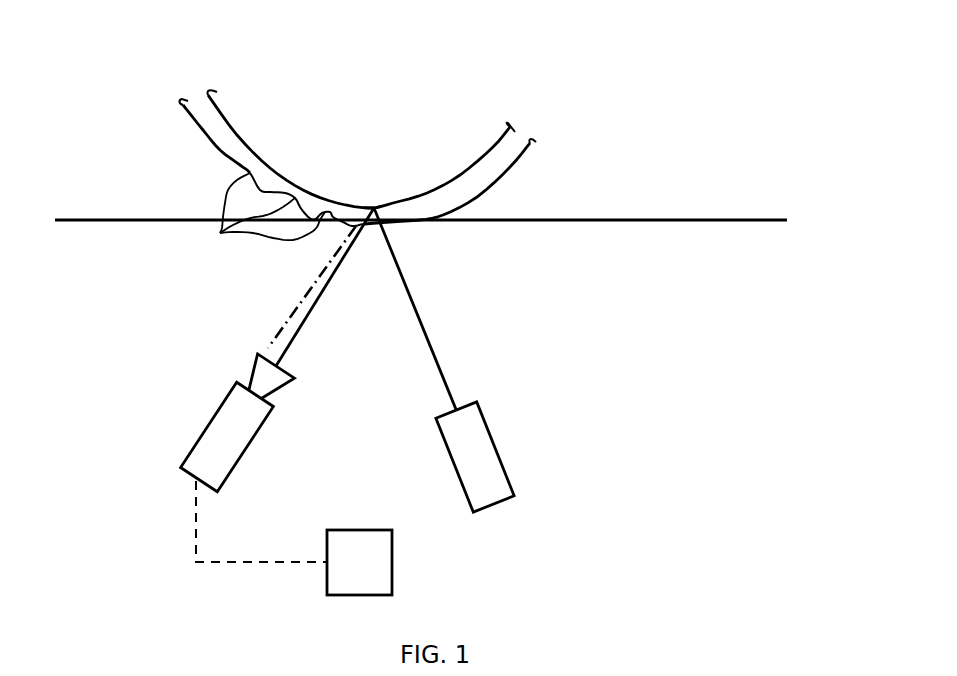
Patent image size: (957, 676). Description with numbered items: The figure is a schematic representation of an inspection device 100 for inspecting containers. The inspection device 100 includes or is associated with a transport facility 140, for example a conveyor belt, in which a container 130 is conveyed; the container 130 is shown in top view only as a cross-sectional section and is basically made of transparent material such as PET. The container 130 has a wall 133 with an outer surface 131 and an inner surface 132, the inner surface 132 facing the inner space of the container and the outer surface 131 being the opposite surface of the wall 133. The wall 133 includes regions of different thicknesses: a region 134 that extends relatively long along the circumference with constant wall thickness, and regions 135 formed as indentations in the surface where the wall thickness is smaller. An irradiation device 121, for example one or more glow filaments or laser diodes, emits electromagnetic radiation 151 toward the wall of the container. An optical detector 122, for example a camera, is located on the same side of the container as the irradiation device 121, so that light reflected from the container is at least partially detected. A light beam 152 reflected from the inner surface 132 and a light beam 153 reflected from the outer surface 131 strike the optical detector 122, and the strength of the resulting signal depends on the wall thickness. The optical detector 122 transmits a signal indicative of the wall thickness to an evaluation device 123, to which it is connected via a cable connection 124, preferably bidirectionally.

The inspection device 100 is at (760, 61).
The irradiation device 121 is at (482, 428).
The optical detector 122 is at (215, 420).
The evaluation device 123 is at (370, 536).
The cable connection 124 is at (269, 561).
The container 130 is at (390, 147).
The outer surface 131 is at (522, 146).
The inner surface 132 is at (456, 180).
The wall 133 is at (517, 131).
The region 134 is at (379, 189).
The regions 135 is at (257, 221).
The transport facility 140 is at (700, 220).
The electromagnetic radiation 151 is at (410, 297).
The light beam reflected from the inner surface 152 is at (310, 290).
The light beam reflected from the outer surface 153 is at (298, 333).